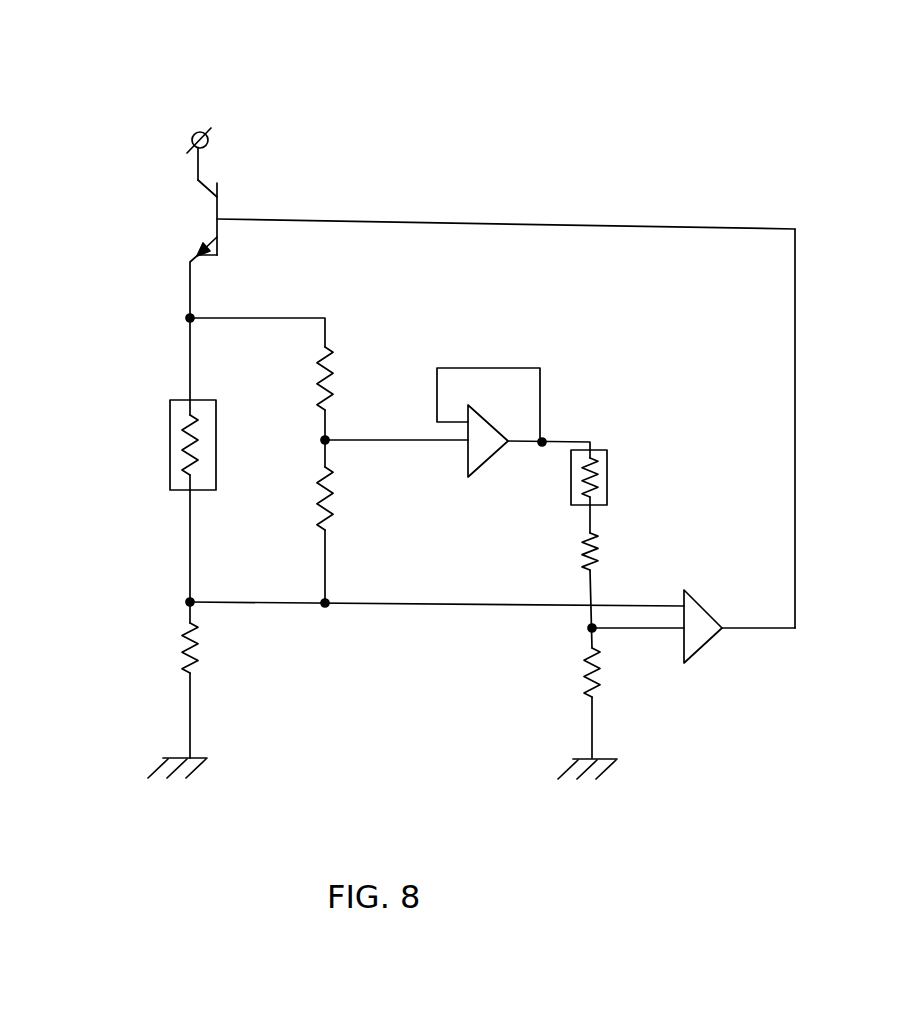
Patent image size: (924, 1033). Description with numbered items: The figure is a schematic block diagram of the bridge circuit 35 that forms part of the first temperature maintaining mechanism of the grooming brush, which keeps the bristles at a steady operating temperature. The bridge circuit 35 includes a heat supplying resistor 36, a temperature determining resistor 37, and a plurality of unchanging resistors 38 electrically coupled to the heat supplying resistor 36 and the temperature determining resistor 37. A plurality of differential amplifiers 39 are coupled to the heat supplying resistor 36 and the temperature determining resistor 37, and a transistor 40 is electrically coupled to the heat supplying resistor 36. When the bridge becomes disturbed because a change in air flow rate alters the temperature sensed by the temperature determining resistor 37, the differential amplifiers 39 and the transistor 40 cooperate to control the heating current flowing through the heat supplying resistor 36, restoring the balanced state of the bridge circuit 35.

The bridge circuit 35 is at (720, 122).
The heat supplying resistor 36 is at (175, 428).
The temperature determining resistor 37 is at (598, 483).
The unchanging resistors 38 is at (333, 350).
The differential amplifiers 39 is at (480, 438).
The transistor 40 is at (207, 178).